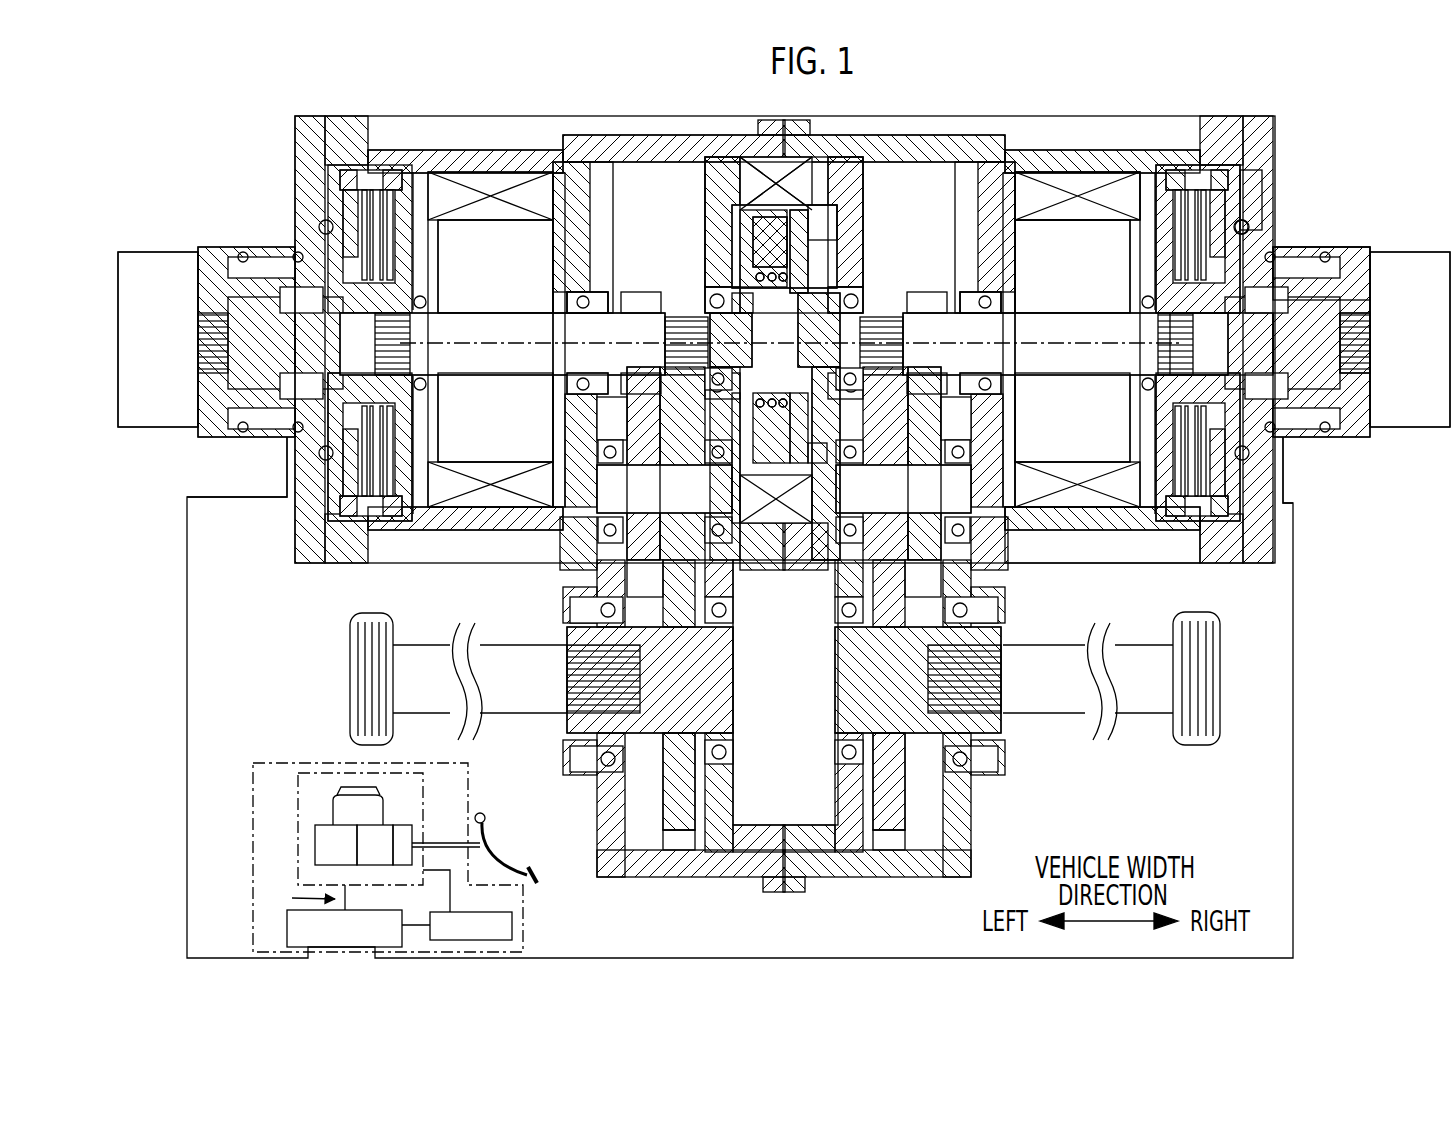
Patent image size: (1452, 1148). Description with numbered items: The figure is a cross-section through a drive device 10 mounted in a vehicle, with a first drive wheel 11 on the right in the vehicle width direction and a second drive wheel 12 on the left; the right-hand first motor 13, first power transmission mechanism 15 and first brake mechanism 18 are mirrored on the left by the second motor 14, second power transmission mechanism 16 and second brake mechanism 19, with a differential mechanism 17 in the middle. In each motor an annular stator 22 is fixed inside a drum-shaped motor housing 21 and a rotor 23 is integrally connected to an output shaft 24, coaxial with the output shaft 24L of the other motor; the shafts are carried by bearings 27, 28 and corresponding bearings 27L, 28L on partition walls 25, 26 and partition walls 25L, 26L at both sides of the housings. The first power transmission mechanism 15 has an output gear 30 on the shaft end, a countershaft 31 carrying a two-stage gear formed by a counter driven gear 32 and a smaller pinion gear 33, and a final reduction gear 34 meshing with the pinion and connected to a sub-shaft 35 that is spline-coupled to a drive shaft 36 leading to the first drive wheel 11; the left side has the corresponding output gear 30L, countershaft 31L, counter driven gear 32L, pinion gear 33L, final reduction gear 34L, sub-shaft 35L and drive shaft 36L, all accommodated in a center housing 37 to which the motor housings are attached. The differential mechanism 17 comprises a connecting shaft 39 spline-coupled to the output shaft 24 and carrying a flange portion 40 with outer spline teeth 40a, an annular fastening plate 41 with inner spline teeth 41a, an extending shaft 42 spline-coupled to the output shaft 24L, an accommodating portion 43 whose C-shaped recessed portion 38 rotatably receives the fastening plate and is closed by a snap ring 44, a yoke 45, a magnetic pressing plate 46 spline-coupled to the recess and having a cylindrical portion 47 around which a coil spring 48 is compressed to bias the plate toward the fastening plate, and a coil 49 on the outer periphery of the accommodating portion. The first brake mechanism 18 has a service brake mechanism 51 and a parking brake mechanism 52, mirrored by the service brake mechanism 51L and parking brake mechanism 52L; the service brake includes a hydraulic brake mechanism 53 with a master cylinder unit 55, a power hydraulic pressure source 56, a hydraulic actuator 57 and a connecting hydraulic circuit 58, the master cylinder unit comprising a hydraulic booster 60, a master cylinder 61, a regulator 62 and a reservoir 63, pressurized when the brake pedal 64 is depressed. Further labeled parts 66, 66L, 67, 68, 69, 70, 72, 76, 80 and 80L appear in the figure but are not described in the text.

The drive device 10 is at (1336, 130).
The first drive wheel 11 is at (1204, 710).
The second drive wheel 12 is at (372, 698).
The first motor 13 is at (1045, 178).
The second motor 14 is at (523, 178).
The first power transmission mechanism 15 is at (948, 275).
The second power transmission mechanism 16 is at (622, 275).
The differential mechanism 17 is at (750, 160).
The first brake mechanism 18 is at (1363, 208).
The second brake mechanism 19 is at (242, 225).
The motor housing 21 is at (425, 160).
The stator 22 is at (1118, 190).
The rotor 23 is at (1030, 500).
The output shaft 24 is at (1060, 360).
The output shaft 24L is at (460, 322).
The partition wall 25 is at (1000, 242).
The partition wall 25L is at (570, 242).
The partition wall 26 is at (1040, 420).
The partition wall 26L is at (545, 425).
The bearing 27 is at (995, 302).
The bearing 27L is at (572, 302).
The bearing 28 is at (1040, 382).
The bearing 28L is at (540, 382).
The output gear 30 is at (950, 295).
The output gear 30L is at (632, 293).
The countershaft 31 is at (913, 506).
The countershaft 31L is at (690, 506).
The counter driven gear 32 is at (925, 398).
The counter driven gear 32L is at (640, 395).
The pinion gear 33 is at (926, 445).
The pinion gear 33L is at (660, 450).
The final reduction gear 34 is at (888, 835).
The final reduction gear 34L is at (680, 835).
The sub-shaft 35 is at (920, 720).
The sub-shaft 35L is at (705, 708).
The drive shaft 36 is at (1055, 700).
The drive shaft 36L is at (520, 700).
The center housing 37 is at (883, 148).
The recessed portion 38 is at (740, 540).
The connecting shaft 39 is at (850, 300).
The flange portion 40 is at (815, 345).
The spline teeth 40a is at (802, 305).
The fastening plate 41 is at (840, 265).
The spline teeth 41a is at (840, 420).
The extending shaft 42 is at (716, 306).
The accommodating portion 43 is at (765, 208).
The snap ring 44 is at (812, 222).
The yoke 45 is at (770, 238).
The pressing plate 46 is at (800, 200).
The cylindrical portion 47 is at (765, 278).
The coil spring 48 is at (762, 400).
The coil 49 is at (750, 180).
The service brake mechanism 51 is at (1190, 565).
The service brake mechanism 51L is at (405, 560).
The parking brake mechanism 52 is at (1340, 448).
The parking brake mechanism 52L is at (192, 440).
The hydraulic brake mechanism 53 is at (530, 952).
The master cylinder unit 55 is at (305, 770).
The power hydraulic pressure source 56 is at (506, 928).
The hydraulic actuator 57 is at (290, 928).
The hydraulic circuit 58 is at (297, 899).
The hydraulic booster 60 is at (405, 838).
The master cylinder 61 is at (375, 858).
The regulator 62 is at (330, 840).
The reservoir 63 is at (368, 800).
The brake pedal 64 is at (545, 862).
The right brake 66 is at (1172, 455).
The left brake 66L is at (400, 475).
The brake housing 67 is at (1250, 185).
The hub 68 is at (1297, 265).
The output spline 69 is at (1355, 340).
The output shaft 70 is at (1182, 300).
The brake disc 72 is at (1186, 165).
The bearing 76 is at (1258, 222).
The right drive shaft 80 is at (1398, 280).
The left drive shaft 80L is at (165, 280).